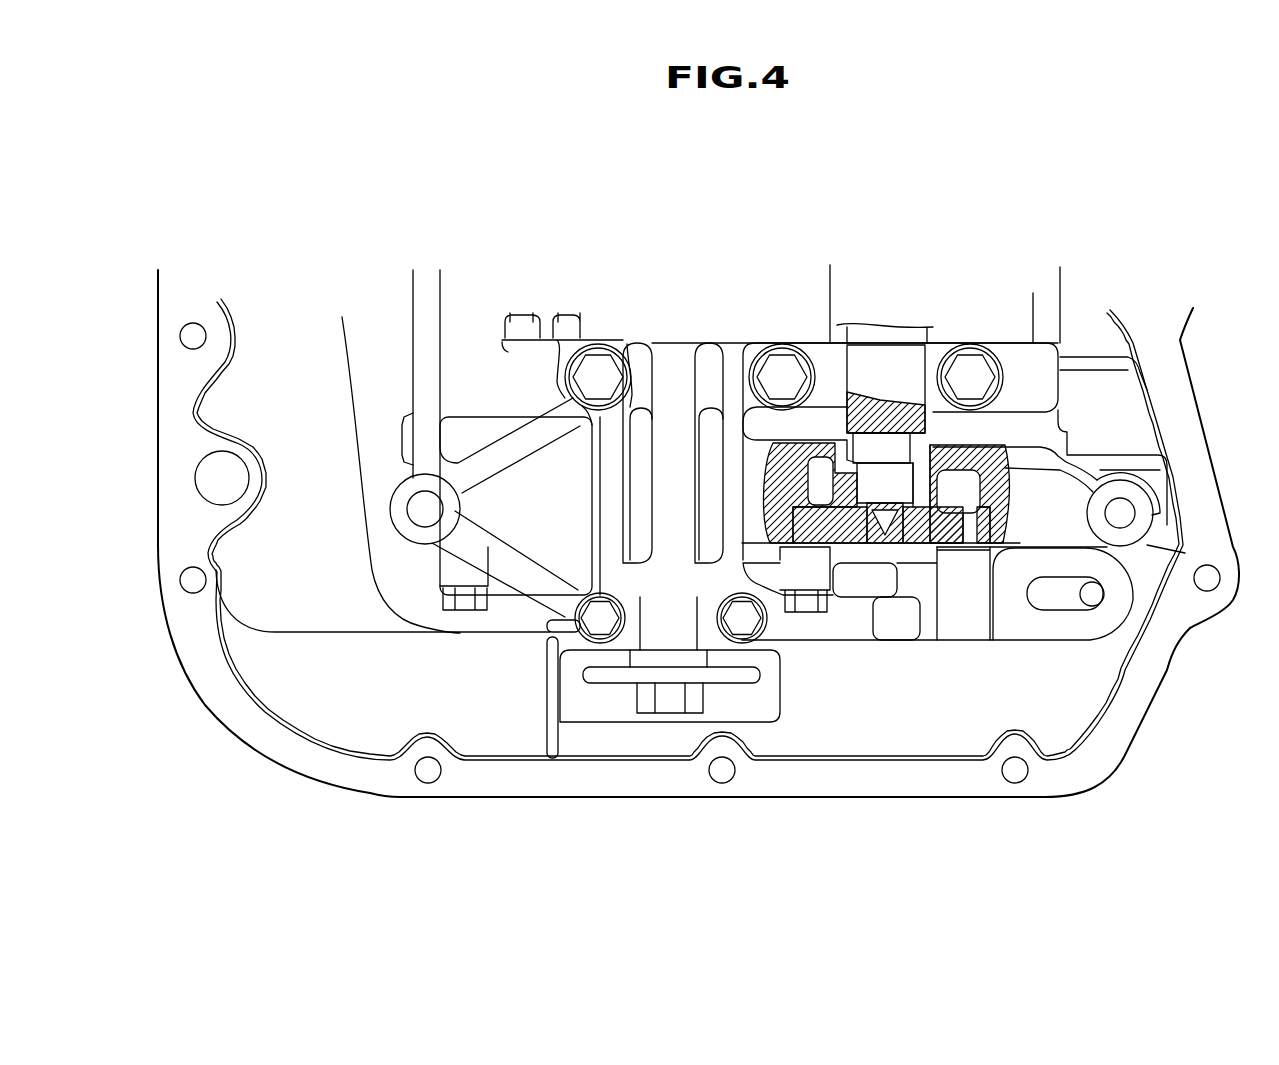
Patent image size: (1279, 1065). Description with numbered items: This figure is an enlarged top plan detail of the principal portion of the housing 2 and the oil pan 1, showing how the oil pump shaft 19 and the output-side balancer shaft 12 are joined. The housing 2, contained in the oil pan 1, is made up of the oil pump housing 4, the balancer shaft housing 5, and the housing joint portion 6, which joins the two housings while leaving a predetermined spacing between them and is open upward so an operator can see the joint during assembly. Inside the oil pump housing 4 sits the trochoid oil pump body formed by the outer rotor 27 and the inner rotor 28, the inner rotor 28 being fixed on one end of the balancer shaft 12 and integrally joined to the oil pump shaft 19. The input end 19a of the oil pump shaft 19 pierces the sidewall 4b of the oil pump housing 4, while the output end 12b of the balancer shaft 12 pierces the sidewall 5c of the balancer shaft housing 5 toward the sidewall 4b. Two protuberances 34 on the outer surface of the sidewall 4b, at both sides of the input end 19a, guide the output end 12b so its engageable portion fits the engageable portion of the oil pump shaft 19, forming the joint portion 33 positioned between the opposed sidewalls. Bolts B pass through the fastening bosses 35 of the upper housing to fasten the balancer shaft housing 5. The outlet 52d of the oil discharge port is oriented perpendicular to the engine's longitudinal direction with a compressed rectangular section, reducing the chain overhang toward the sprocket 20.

The oil pan 1 is at (1138, 754).
The housing 2 is at (505, 640).
The oil pump housing 4 is at (835, 490).
The sidewall of the oil pump housing 4b is at (787, 505).
The balancer shaft housing 5 is at (1017, 340).
The sidewall of the balancer shaft housing 5c is at (820, 343).
The housing joint portion 6 is at (1073, 400).
The output-side balancer shaft 12 is at (907, 380).
The output end of the output-side balancer shaft 12b is at (1113, 462).
The oil pump shaft 19 is at (858, 372).
The input end of the oil pump shaft 19a is at (897, 395).
The sprocket 20 is at (745, 682).
The outer rotor 27 is at (790, 542).
The inner rotor 28 is at (805, 532).
The joint portion 33 is at (845, 438).
The protuberances 34 is at (800, 445).
The fastening boss 35 is at (405, 510).
The outlet of the oil discharge port 52d is at (1087, 606).
The bolts B is at (787, 367).